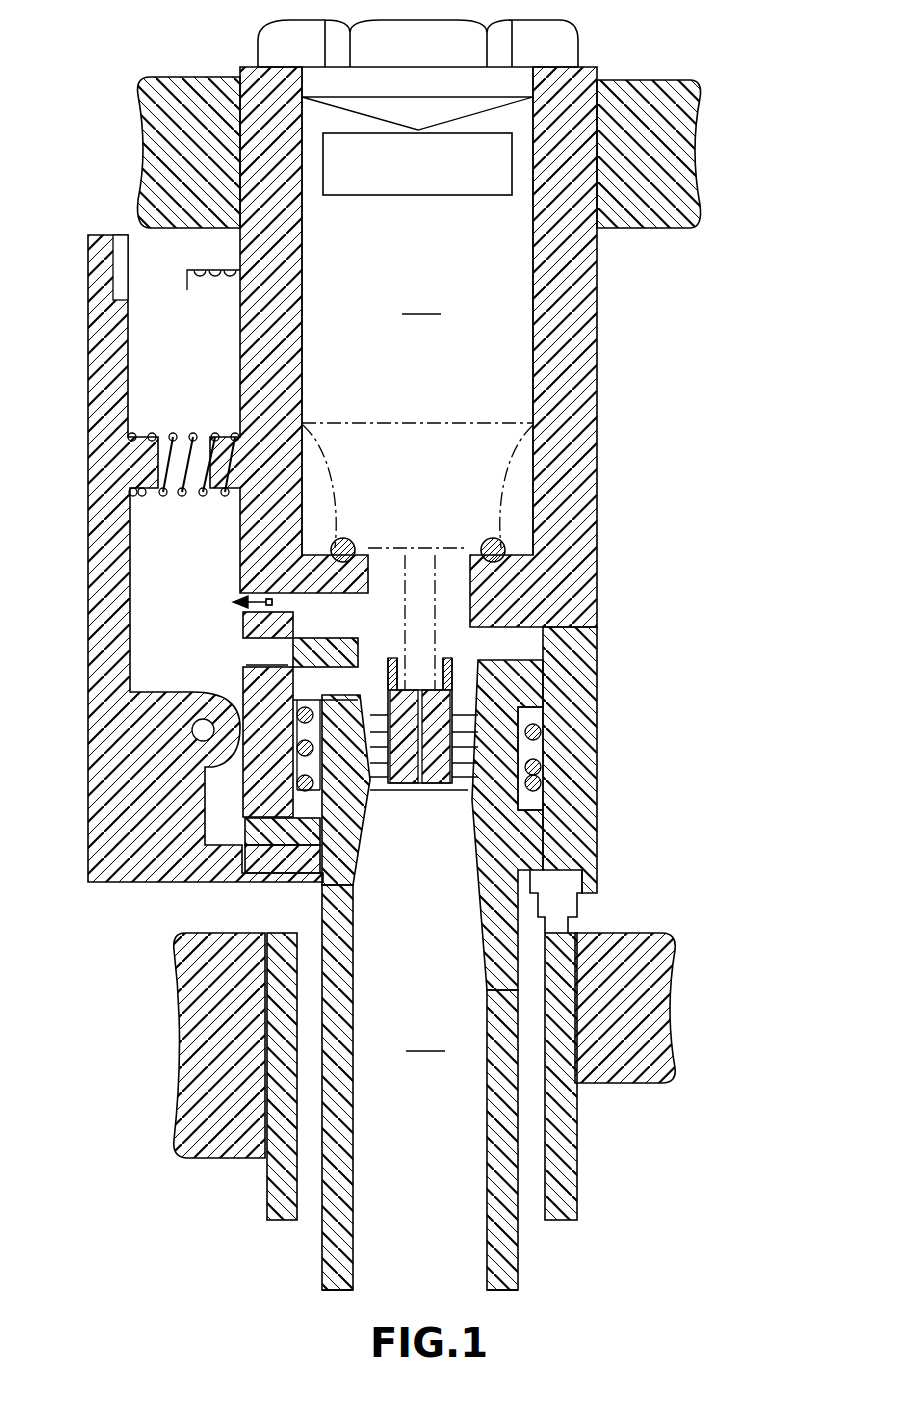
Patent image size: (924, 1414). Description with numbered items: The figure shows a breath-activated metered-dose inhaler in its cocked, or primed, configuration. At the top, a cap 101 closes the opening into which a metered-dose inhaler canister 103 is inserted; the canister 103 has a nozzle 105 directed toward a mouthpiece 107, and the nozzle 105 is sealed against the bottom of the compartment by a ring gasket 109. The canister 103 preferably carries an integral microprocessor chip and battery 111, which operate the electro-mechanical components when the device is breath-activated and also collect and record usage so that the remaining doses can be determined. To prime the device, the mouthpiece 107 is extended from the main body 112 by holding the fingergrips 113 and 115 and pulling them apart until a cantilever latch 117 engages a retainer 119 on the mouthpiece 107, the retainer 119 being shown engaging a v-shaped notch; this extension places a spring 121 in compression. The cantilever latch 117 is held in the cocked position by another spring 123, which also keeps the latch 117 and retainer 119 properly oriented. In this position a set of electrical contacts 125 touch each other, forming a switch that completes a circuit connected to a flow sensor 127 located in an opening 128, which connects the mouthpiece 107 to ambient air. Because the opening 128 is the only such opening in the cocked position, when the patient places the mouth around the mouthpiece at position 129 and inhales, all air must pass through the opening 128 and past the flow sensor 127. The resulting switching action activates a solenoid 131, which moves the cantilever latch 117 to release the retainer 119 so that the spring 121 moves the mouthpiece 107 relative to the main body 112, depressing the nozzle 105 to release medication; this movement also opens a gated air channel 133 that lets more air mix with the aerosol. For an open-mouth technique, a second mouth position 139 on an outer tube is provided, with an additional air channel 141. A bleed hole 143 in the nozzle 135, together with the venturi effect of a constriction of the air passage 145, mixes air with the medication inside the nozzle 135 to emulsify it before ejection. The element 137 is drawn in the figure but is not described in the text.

The cap 101 is at (570, 50).
The metered-dose inhaler canister 103 is at (417, 311).
The nozzle 105 is at (420, 603).
The mouthpiece 107 is at (420, 1087).
The ring gasket 109 is at (483, 540).
The chip and battery 111 is at (440, 200).
The main body 112 is at (503, 590).
The fingergrip 113 is at (172, 1120).
The fingergrip 115 is at (155, 160).
The cantilever latch 117 is at (88, 750).
The retainer 119 is at (312, 872).
The spring 121 is at (525, 781).
The spring 123 is at (166, 495).
The electrical contacts 125 is at (243, 863).
The flow sensor 127 is at (262, 603).
The opening 128 is at (240, 600).
The mouth position 129 is at (325, 1283).
The solenoid 131 is at (214, 282).
The gated air channel 133 is at (300, 714).
The nozzle 135 is at (396, 778).
The plug 137 is at (562, 895).
The second mouth position 139 is at (268, 1200).
The additional air channel 141 is at (312, 1212).
The bleed hole 143 is at (390, 700).
The constriction of the air passage 145 is at (470, 763).